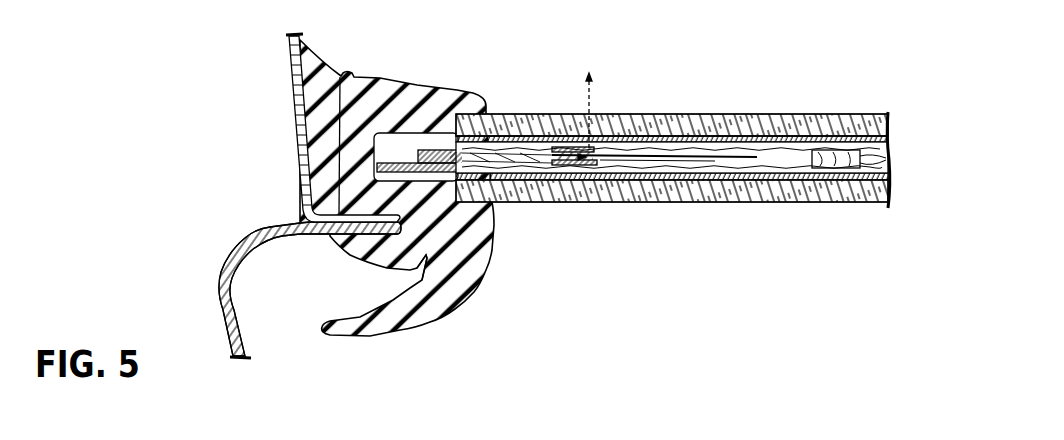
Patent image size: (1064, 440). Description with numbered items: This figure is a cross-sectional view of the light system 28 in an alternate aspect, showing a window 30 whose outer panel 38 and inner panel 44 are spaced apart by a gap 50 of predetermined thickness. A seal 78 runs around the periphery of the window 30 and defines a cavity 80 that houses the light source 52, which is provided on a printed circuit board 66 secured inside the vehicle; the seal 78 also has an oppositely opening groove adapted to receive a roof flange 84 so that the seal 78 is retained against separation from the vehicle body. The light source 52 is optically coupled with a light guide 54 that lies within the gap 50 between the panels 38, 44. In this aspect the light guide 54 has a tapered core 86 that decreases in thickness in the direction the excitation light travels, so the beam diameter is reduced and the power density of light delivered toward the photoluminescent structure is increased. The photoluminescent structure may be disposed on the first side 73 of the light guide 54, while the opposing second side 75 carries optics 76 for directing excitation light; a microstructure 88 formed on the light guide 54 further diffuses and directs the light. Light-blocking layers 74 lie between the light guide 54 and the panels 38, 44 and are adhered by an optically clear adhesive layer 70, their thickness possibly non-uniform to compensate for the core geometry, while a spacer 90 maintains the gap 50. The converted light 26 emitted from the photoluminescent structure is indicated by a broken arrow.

The converted light 26 is at (594, 70).
The light system 28 is at (849, 60).
The window 30 is at (750, 155).
The outer panel 38 is at (888, 203).
The inner panel 44 is at (890, 122).
The gap 50 is at (727, 155).
The light source 52 is at (432, 149).
The light guide 54 is at (541, 151).
The printed circuit board 66 is at (408, 162).
The adhesive layer 70 is at (887, 157).
The first side 73 is at (511, 149).
The light-blocking layer 74 is at (885, 143).
The second side 75 is at (520, 168).
The optics 76 is at (597, 148).
The seal 78 is at (373, 100).
The cavity 80 is at (388, 144).
The roof flange 84 is at (299, 241).
The tapered core 86 is at (622, 172).
The microstructure 88 is at (420, 285).
The spacer 90 is at (833, 168).